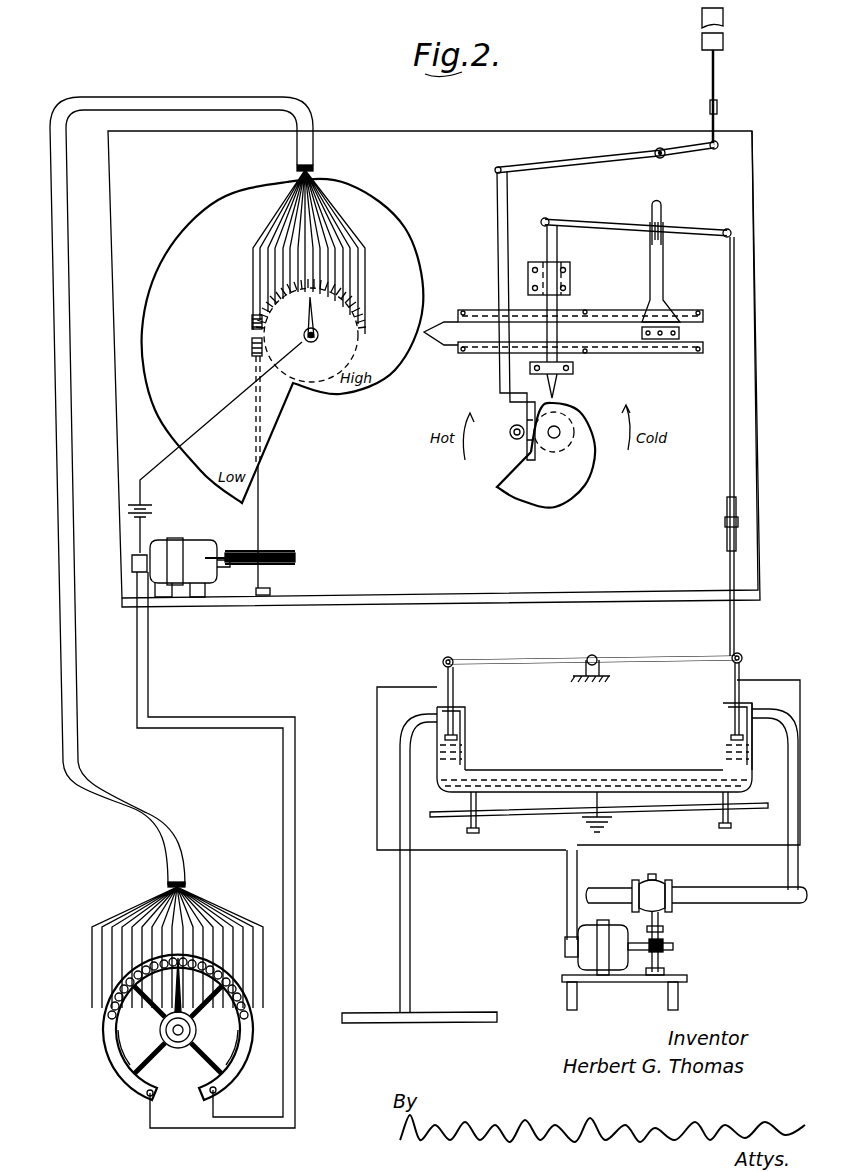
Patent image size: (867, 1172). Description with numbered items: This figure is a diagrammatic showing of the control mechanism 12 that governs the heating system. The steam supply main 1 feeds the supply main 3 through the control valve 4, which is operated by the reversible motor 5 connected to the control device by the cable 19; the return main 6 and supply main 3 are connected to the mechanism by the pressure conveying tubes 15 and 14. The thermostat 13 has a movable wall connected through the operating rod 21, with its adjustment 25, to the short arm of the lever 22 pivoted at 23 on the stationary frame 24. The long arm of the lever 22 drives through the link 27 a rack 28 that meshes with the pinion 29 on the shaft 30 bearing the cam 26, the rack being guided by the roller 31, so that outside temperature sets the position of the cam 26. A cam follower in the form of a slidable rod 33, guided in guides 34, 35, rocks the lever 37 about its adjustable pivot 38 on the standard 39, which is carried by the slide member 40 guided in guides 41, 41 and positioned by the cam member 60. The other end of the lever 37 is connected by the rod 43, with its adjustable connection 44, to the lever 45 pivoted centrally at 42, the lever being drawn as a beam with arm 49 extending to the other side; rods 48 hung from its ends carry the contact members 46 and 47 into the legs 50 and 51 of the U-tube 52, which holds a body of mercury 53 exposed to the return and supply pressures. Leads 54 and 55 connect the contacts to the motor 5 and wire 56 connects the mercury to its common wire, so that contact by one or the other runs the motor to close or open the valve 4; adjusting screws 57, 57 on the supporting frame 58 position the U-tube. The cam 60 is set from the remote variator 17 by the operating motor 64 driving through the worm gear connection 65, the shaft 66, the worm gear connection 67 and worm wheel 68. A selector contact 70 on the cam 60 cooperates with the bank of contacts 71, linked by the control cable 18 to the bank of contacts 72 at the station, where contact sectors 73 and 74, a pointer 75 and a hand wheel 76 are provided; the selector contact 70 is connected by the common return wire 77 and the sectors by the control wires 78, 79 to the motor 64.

The steam supply main 1 is at (604, 888).
The supply main 3 is at (718, 892).
The control valve 4 is at (656, 884).
The reversible motor 5 is at (580, 950).
The return main 6 is at (455, 1012).
The control mechanism 12 is at (96, 73).
The thermostat 13 is at (695, 25).
The pressure conveying tube 14 is at (788, 781).
The pressure conveying tube 15 is at (412, 916).
The variator 17 is at (92, 1037).
The control cable 18 is at (160, 826).
The cable 19 is at (560, 912).
The operating rod 21 is at (718, 63).
The lever 22 is at (659, 145).
The pivot 23 is at (666, 156).
The stationary frame 24 is at (745, 165).
The adjustment 25 is at (720, 108).
The cam 26 is at (583, 480).
The link 27 is at (495, 206).
The rack 28 is at (527, 450).
The pinion 29 is at (578, 416).
The shaft 30 is at (560, 434).
The roller 31 is at (510, 428).
The slidable rod 33 is at (570, 300).
The guide 34 is at (536, 263).
The guide 35 is at (574, 370).
The lever 37 is at (592, 222).
The adjustable pivot 38 is at (664, 211).
The standard 39 is at (664, 268).
The slide member 40 is at (630, 340).
The guides 41 is at (476, 307).
The pivot 42 is at (600, 654).
The rod 43 is at (729, 437).
The adjustable connection 44 is at (726, 522).
The lever 45 is at (655, 654).
The contact member 46 is at (468, 738).
The contact member 47 is at (724, 737).
The rods 48 is at (455, 696).
The beam 49 is at (504, 652).
The leg 50 is at (468, 716).
The leg 51 is at (724, 712).
The U-tube 52 is at (540, 772).
The body of mercury 53 is at (590, 778).
The lead 54 is at (404, 686).
The lead 55 is at (766, 682).
The wire 56 is at (600, 798).
The adjusting screws 57 is at (719, 825).
The supporting frame 58 is at (560, 815).
The cam member 60 is at (358, 393).
The operating motor 64 is at (200, 549).
The worm gear connection 65 is at (277, 553).
The shaft 66 is at (262, 498).
The worm gear connection 67 is at (252, 350).
The worm wheel 68 is at (345, 346).
The selector contact 70 is at (295, 323).
The bank of contacts 71 is at (252, 322).
The bank of contacts 72 is at (88, 947).
The contact sector 73 is at (112, 1050).
The contact sector 74 is at (244, 1060).
The pointer 75 is at (176, 995).
The hand wheel 76 is at (182, 1046).
The common return wire 77 is at (200, 436).
The control wire 78 is at (190, 1132).
The control wire 79 is at (252, 1128).